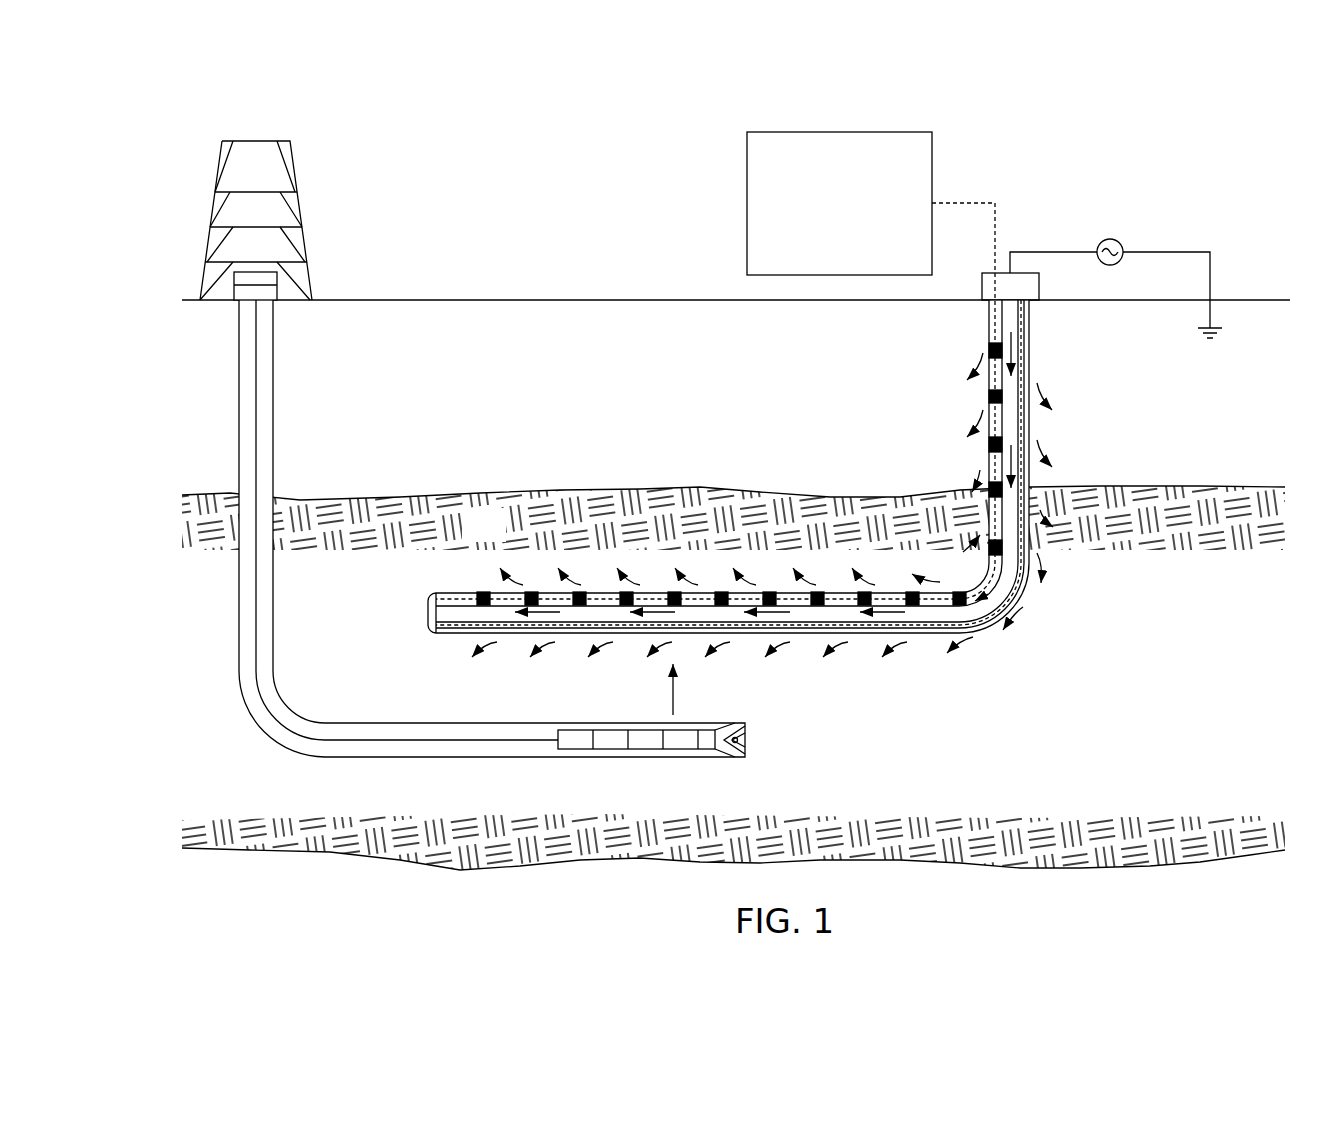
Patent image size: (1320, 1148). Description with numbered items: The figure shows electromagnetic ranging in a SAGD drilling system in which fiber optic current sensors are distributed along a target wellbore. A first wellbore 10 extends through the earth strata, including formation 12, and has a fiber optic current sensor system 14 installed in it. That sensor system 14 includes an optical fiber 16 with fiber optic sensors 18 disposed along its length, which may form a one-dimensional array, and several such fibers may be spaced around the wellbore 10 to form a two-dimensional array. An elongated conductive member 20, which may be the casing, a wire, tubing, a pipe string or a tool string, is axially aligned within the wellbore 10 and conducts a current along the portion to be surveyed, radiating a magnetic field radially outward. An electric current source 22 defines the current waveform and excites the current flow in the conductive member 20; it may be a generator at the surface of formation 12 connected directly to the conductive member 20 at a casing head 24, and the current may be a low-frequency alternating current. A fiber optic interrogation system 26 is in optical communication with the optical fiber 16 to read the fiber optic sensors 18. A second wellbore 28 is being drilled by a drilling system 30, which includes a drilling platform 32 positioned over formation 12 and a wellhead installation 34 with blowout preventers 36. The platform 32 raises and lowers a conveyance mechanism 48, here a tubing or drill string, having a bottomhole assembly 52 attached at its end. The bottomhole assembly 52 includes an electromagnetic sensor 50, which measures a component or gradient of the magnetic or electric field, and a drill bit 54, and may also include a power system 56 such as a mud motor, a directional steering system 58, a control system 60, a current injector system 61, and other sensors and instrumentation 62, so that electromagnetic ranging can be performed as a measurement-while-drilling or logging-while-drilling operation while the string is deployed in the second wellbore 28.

The first wellbore 10 is at (1031, 340).
The formation 12 is at (500, 538).
The fiber optic current sensor system 14 is at (880, 438).
The optical fiber 16 is at (990, 318).
The fiber optic sensor 18 is at (988, 440).
The elongated conductive member 20 is at (1032, 430).
The electric current source 22 is at (1120, 242).
The casing head 24 is at (1010, 273).
The fiber optic interrogation system 26 is at (892, 132).
The second wellbore 28 is at (398, 757).
The drilling system 30 is at (318, 168).
The drilling platform 32 is at (213, 203).
The wellhead installation 34 is at (293, 270).
The blowout preventers 36 is at (232, 297).
The conveyance mechanism 48 is at (343, 740).
The electromagnetic sensor 50 is at (648, 762).
The bottomhole assembly 52 is at (566, 758).
The drill bit 54 is at (748, 740).
The power system 56 is at (573, 730).
The directional steering system 58 is at (615, 750).
The control system 60 is at (648, 730).
The current injector system 61 is at (705, 730).
The other sensors and instrumentation 62 is at (678, 750).